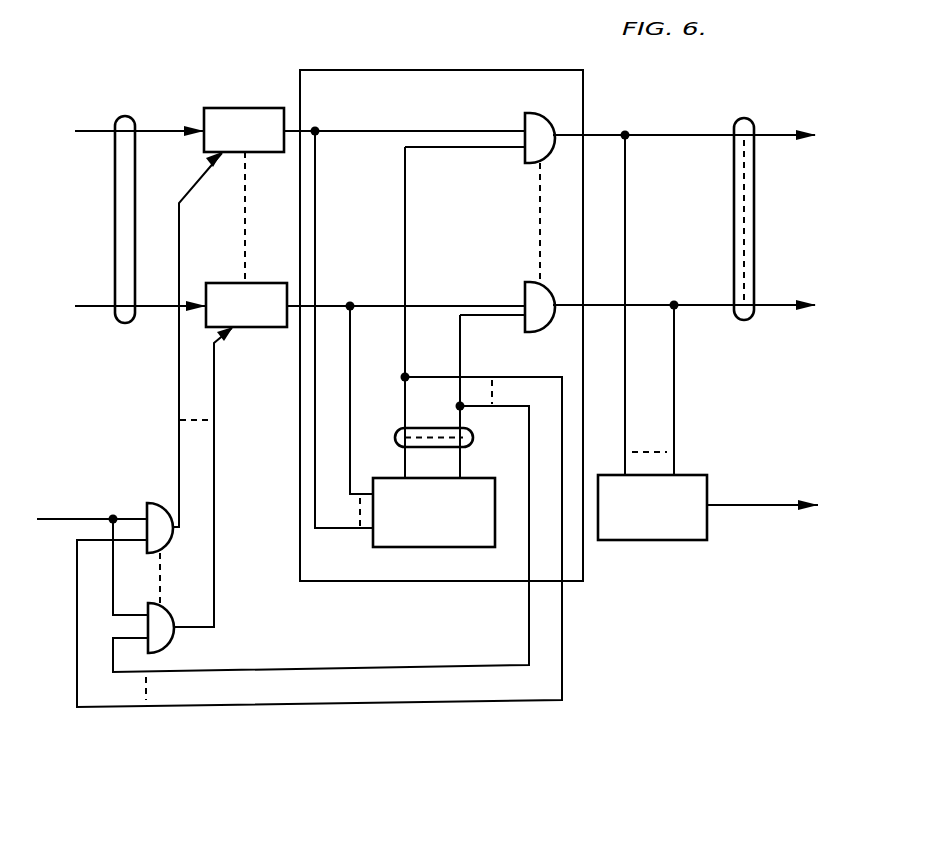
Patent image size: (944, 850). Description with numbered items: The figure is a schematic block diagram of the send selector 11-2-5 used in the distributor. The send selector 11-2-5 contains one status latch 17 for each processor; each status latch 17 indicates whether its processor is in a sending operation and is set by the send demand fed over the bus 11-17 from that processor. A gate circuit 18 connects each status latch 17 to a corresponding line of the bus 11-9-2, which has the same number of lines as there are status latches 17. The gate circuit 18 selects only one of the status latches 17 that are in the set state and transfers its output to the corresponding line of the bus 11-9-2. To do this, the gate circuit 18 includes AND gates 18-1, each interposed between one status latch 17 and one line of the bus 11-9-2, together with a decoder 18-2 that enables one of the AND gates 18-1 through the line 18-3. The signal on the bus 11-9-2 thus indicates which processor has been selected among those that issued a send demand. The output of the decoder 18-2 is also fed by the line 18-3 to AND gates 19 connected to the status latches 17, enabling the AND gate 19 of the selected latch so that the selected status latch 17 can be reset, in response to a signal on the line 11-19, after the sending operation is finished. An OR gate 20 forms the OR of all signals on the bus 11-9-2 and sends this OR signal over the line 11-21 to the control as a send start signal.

The bus 11-17 is at (128, 116).
The status latch 17 is at (262, 108).
The gate circuit 18 is at (518, 70).
The AND gate 18-1 is at (536, 112).
The decoder 18-2 is at (486, 478).
The line 18-3 is at (395, 437).
The bus 11-9-2 is at (748, 118).
The OR gate 20 is at (700, 475).
The line 11-21 is at (770, 505).
The line 11-19 is at (90, 519).
The AND gate 19 is at (166, 548).
The send selector 11-2-5 is at (582, 598).